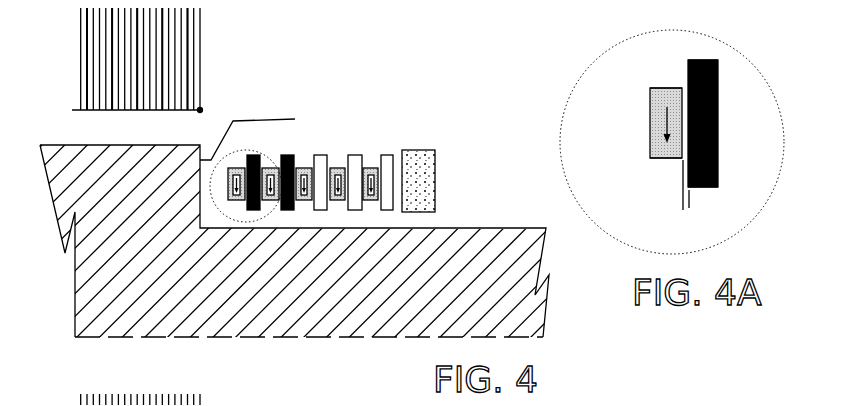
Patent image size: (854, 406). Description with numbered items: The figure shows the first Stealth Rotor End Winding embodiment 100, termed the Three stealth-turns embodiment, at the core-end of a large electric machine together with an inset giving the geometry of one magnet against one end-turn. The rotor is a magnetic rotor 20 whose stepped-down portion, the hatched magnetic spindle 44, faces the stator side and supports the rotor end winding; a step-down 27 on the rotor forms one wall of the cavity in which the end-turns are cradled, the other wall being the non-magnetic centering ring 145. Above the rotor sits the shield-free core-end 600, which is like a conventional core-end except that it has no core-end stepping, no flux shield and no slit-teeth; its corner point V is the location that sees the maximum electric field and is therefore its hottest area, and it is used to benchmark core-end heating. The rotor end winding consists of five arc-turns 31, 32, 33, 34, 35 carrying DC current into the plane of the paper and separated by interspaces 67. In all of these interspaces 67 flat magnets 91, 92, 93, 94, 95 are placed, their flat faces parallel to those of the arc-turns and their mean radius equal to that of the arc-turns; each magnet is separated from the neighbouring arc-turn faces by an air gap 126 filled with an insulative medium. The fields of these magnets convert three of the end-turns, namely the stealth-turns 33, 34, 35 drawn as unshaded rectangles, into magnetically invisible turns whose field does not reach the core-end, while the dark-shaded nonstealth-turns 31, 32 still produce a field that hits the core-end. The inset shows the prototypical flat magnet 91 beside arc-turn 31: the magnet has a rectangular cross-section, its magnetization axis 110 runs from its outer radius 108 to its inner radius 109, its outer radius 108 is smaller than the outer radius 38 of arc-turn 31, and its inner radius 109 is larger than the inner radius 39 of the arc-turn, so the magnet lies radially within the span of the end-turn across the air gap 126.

In FIG. 4, the shield-free core-end 600 is at (66, 71).
In FIG. 4, the corner point V is at (198, 112).
In FIG. 4, the magnetic rotor 20 is at (75, 288).
In FIG. 4, the magnetic spindle 44 is at (367, 337).
In FIG. 4, the step-down 27 is at (295, 119).
In FIG. 4, the first Stealth Rotor End Winding embodiment 100 is at (464, 110).
In FIG. 4, the arc-turn 31 is at (253, 171).
In FIG. 4A, the arc-turn 31 is at (717, 128).
In FIG. 4, the rotor end-turn 32 is at (287, 171).
In FIG. 4, the stealth-turn 33 is at (321, 171).
In FIG. 4, the stealth-turn 34 is at (355, 171).
In FIG. 4, the stealth-turn 35 is at (388, 171).
In FIG. 4, the flat magnet 91 is at (238, 199).
In FIG. 4A, the flat magnet 91 is at (652, 125).
In FIG. 4, the flat magnet 92 is at (271, 199).
In FIG. 4, the flat magnet 93 is at (306, 199).
In FIG. 4, the flat magnet 94 is at (338, 199).
In FIG. 4, the flat magnet 95 is at (372, 199).
In FIG. 4, the interspaces 67 is at (371, 157).
In FIG. 4, the non-magnetic centering ring 145 is at (435, 178).
In FIG. 4A, the outer radius of the arc-turn 38 is at (707, 60).
In FIG. 4A, the inner radius of the arc-turn 39 is at (705, 187).
In FIG. 4A, the outer radius 108 is at (662, 88).
In FIG. 4A, the inner radius 109 is at (662, 158).
In FIG. 4A, the magnetization axis 110 is at (650, 112).
In FIG. 4A, the air gap 126 is at (685, 212).